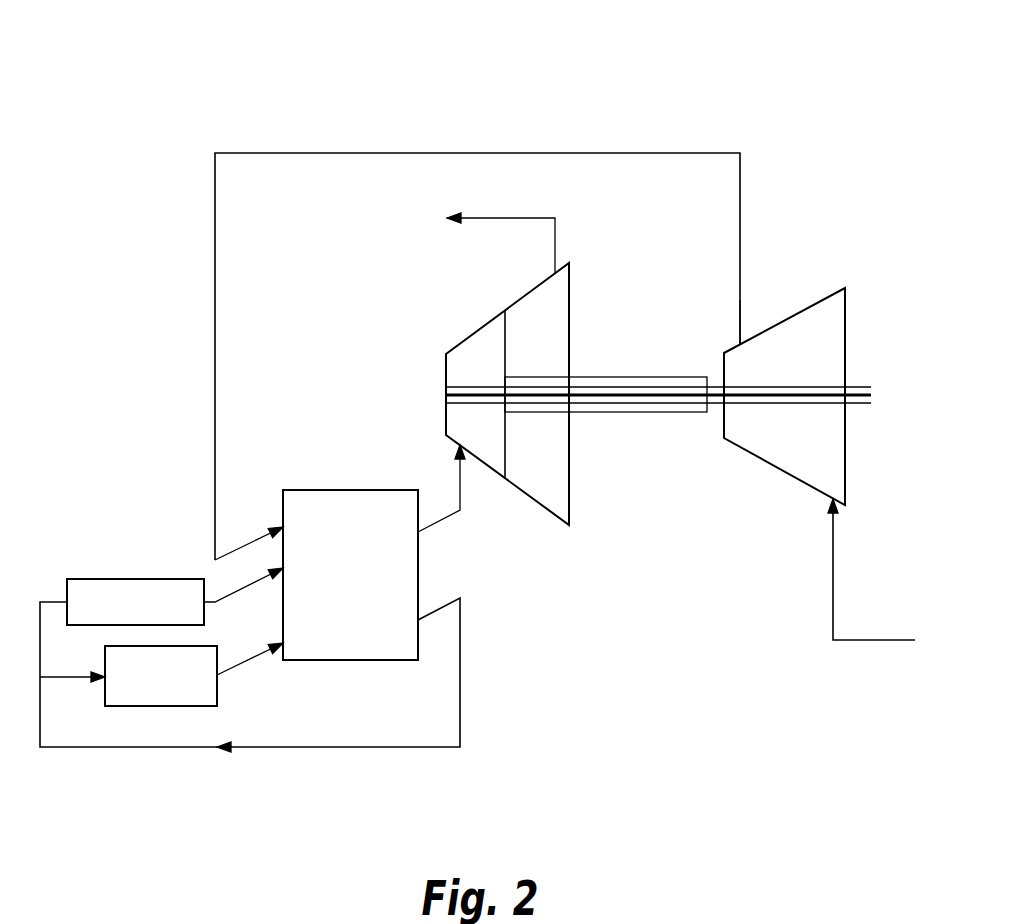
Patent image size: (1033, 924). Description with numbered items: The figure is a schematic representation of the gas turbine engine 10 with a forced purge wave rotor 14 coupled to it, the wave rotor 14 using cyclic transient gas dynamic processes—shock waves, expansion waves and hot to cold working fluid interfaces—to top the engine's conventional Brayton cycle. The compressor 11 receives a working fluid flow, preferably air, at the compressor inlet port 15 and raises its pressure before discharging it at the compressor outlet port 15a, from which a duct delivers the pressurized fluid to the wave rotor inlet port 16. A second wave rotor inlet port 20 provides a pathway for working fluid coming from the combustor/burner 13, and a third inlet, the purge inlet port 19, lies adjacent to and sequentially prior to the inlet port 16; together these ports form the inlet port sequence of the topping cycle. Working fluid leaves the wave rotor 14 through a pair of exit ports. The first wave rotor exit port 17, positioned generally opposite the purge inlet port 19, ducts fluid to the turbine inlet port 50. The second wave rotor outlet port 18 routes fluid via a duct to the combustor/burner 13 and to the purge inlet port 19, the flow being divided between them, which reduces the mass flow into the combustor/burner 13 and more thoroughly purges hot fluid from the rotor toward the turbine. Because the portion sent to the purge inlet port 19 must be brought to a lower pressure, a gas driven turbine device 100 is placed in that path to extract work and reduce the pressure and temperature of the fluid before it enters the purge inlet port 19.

The gas turbine engine 10 is at (708, 90).
The compressor 11 is at (815, 352).
The combustor/burner 13 is at (146, 687).
The wave rotor 14 is at (387, 643).
The compressor inlet port 15 is at (833, 564).
The compressor outlet port 15a is at (741, 323).
The wave rotor inlet port 16 is at (249, 538).
The first wave rotor exit port 17 is at (441, 488).
The second wave rotor outlet port 18 is at (250, 662).
The purge inlet port 19 is at (243, 581).
The second wave rotor inlet port 20 is at (250, 672).
The turbine inlet port 50 is at (457, 475).
The gas driven turbine device 100 is at (104, 560).